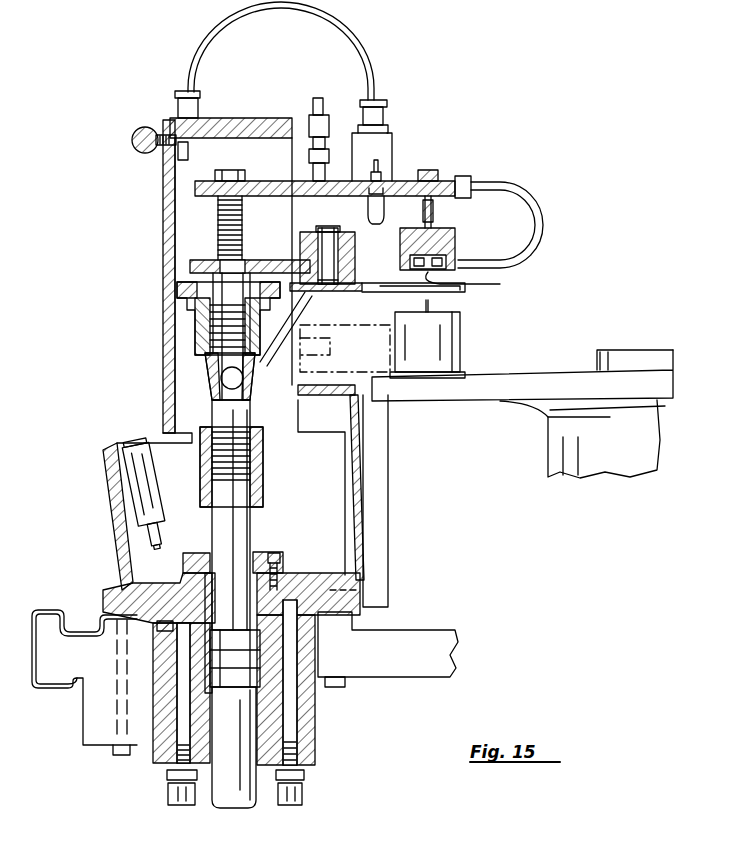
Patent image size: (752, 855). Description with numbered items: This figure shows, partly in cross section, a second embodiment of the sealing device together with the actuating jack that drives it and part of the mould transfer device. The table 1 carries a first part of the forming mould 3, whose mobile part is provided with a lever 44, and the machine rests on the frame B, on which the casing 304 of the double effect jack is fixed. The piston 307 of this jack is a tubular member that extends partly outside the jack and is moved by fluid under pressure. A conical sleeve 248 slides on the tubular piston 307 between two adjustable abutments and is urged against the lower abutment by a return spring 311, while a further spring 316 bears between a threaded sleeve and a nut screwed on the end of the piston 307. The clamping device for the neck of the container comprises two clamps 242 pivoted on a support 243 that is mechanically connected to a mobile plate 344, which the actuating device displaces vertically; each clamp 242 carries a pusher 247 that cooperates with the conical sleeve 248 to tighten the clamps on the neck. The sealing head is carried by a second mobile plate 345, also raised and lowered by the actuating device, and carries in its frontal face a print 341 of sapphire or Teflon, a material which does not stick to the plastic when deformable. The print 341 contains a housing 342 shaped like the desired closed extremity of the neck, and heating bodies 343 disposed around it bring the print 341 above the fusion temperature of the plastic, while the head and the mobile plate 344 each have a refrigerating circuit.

The table 1 is at (511, 385).
The forming mould 3 is at (427, 339).
The lever 44 is at (345, 348).
The clamps 242 is at (370, 292).
The support 243 is at (322, 292).
The pusher 247 is at (256, 364).
The conical sleeve 248 is at (250, 388).
The casing 304 is at (305, 718).
The piston 307 is at (232, 650).
The return spring 311 is at (215, 340).
The spring 316 is at (216, 208).
The print 341 is at (460, 243).
The housing 342 is at (466, 278).
The heating bodies 343 is at (404, 256).
The mobile plate 344 is at (426, 178).
The mobile plate 345 is at (290, 260).
The frame B is at (388, 649).